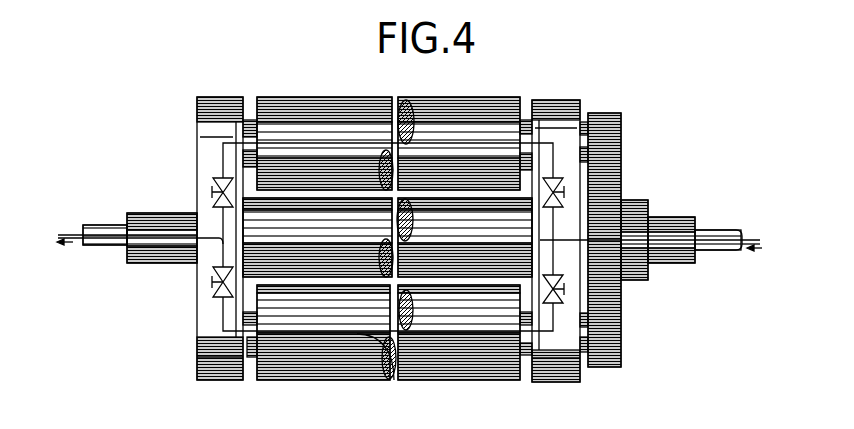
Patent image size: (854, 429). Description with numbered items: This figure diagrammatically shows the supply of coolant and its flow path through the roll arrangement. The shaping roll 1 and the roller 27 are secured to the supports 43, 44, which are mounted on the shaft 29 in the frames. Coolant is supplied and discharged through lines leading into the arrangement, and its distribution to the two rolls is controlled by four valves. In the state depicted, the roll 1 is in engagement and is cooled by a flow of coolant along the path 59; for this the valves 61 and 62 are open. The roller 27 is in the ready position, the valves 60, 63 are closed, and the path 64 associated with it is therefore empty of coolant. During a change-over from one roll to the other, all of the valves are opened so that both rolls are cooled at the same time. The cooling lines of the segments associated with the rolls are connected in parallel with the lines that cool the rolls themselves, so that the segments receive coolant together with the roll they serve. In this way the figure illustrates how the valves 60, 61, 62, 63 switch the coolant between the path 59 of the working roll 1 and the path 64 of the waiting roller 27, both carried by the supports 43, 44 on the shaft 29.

The shaping roll 1 is at (302, 380).
The roller 27 is at (297, 117).
The shaft 29 is at (268, 236).
The support 43 is at (219, 380).
The support 44 is at (571, 382).
The coolant path 59 is at (366, 372).
The valve 60 is at (215, 179).
The valve 61 is at (216, 296).
The valve 62 is at (557, 303).
The valve 63 is at (562, 189).
The coolant path 64 is at (467, 148).